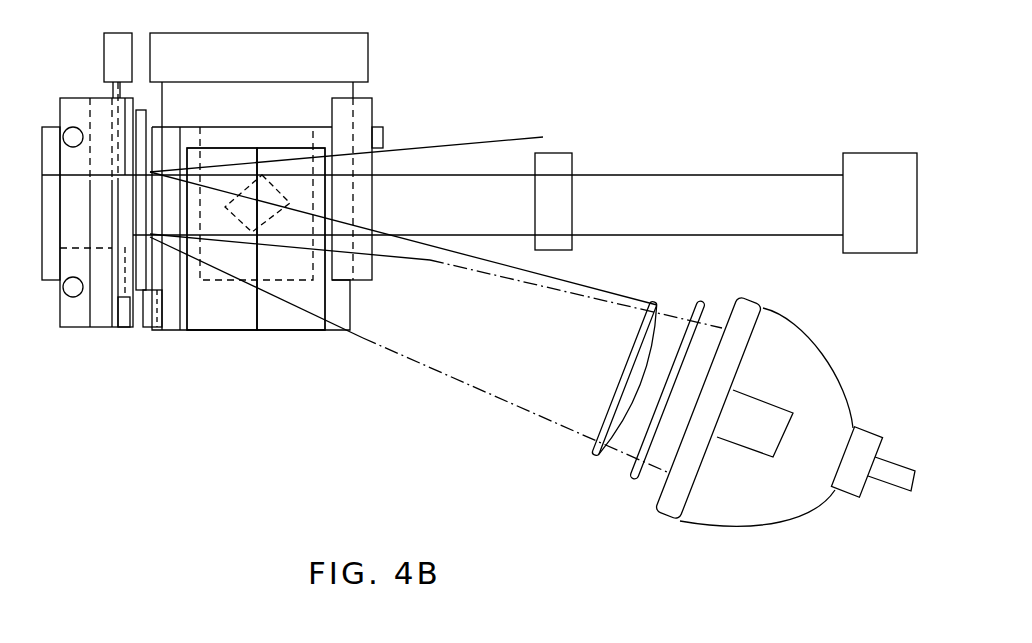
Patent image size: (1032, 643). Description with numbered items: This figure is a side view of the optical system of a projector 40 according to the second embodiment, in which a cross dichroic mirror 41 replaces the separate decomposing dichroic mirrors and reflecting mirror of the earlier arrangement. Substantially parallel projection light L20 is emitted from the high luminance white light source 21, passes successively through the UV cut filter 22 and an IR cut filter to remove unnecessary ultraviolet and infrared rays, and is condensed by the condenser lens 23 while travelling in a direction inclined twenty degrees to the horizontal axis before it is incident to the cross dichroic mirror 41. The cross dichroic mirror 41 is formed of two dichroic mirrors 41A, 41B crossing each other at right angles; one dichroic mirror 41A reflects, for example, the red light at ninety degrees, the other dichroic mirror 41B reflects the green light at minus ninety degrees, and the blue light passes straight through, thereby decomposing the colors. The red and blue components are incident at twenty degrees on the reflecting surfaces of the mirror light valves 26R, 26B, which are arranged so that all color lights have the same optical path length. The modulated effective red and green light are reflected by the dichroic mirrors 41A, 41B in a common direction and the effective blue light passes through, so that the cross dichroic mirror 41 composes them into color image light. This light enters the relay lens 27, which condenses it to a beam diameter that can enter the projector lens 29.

The mirror light valve 26B is at (98, 110).
The mirror light valve 26R is at (310, 108).
The relay lens 27 is at (552, 180).
The projector lens 29 is at (886, 238).
The cross dichroic mirror 41 is at (184, 336).
The dichroic mirror 41A is at (222, 330).
The dichroic mirror 41B is at (297, 330).
The projection light L20 is at (460, 352).
The projector 40 is at (905, 572).
The high luminance white light source 21 is at (727, 497).
The UV cut filter 22 is at (633, 480).
The condenser lens 23 is at (597, 456).